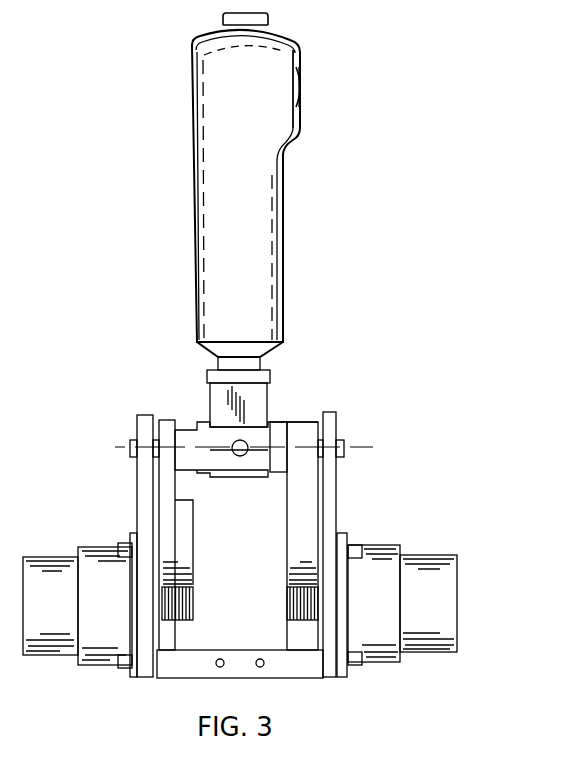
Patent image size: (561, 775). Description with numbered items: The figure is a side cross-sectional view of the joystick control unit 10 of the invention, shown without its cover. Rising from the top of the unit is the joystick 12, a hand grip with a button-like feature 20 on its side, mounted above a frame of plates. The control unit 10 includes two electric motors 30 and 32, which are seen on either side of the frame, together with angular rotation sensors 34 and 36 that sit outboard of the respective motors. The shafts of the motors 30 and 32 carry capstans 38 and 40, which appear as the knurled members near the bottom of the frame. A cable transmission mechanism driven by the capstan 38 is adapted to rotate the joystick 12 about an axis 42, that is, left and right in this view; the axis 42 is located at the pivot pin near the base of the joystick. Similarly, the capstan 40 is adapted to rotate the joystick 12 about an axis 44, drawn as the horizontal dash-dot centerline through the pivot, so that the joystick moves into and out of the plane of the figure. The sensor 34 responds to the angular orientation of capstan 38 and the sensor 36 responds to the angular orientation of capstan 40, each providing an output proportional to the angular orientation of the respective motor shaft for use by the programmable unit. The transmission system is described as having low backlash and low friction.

The control unit 10 is at (327, 367).
The joystick 12 is at (247, 252).
The button 20 is at (301, 91).
The electric motor 30 is at (366, 544).
The electric motor 32 is at (105, 546).
The angular rotation sensor 34 is at (440, 556).
The angular rotation sensor 36 is at (50, 557).
The capstan 38 is at (293, 618).
The capstan 40 is at (193, 616).
The axis 42 is at (243, 457).
The axis 44 is at (117, 447).